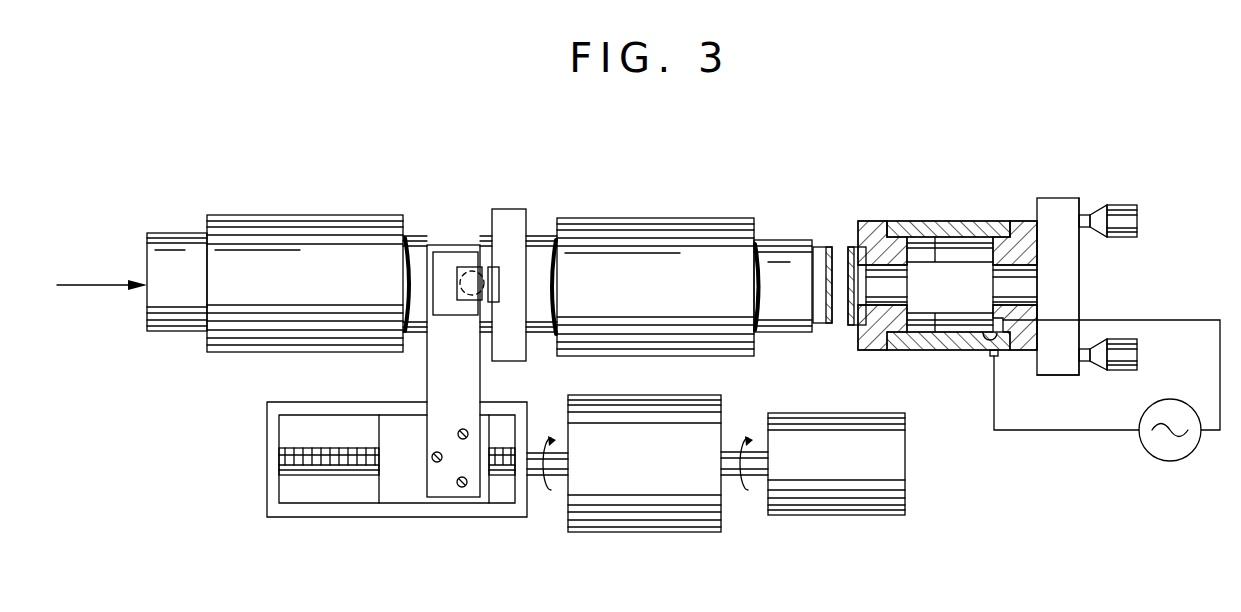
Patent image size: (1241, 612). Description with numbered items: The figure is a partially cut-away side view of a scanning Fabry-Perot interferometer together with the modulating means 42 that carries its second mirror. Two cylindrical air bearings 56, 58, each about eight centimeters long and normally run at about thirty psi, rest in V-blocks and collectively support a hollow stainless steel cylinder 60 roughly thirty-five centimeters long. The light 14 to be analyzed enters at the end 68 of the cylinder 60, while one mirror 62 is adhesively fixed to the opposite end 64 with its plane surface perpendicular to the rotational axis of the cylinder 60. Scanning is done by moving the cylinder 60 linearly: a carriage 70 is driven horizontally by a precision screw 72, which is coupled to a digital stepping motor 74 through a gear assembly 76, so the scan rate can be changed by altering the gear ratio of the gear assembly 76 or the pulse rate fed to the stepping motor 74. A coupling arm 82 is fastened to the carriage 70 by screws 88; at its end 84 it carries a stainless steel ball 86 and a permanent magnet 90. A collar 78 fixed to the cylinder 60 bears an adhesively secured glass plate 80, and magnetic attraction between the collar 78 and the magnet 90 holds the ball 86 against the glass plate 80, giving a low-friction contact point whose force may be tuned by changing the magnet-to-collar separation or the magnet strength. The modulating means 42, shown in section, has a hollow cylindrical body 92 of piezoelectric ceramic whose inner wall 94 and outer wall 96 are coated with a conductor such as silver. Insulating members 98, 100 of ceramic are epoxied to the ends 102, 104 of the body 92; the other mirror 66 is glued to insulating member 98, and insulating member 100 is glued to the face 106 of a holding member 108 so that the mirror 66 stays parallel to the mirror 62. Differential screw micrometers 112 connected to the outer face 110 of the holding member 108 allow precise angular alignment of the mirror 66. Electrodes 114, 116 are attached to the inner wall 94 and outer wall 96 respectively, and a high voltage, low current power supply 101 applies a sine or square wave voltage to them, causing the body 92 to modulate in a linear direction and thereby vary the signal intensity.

The light 14 is at (85, 282).
The modulating means 42 is at (896, 352).
The cylindrical air bearing 56 is at (639, 222).
The cylindrical air bearing 58 is at (293, 220).
The hollow metal cylinder 60 is at (780, 242).
The mirror 62 is at (830, 250).
The end of cylinder 64 is at (818, 248).
The mirror 66 is at (850, 324).
The end of cylinder 68 is at (147, 304).
The carriage 70 is at (397, 427).
The precision screw 72 is at (317, 453).
The digital stepping motor 74 is at (853, 473).
The gear assembly 76 is at (657, 475).
The collar 78 is at (506, 212).
The glass plate 80 is at (500, 287).
The coupling arm 82 is at (480, 378).
The end of coupling arm 84 is at (489, 258).
The ball 86 is at (488, 283).
The screws 88 is at (462, 430).
The permanent magnet 90 is at (455, 313).
The hollow cylindrical body 92 is at (920, 352).
The inner wall 94 is at (932, 240).
The outer wall 96 is at (955, 223).
The insulating member 98 is at (872, 225).
The insulating member 100 is at (1020, 224).
The power supply 101 is at (1150, 450).
The end of cylindrical body 102 is at (895, 222).
The end of cylindrical body 104 is at (1010, 224).
The face of holding member 106 is at (1037, 375).
The holding member 108 is at (1070, 288).
The outer face of holding member 110 is at (1080, 260).
The differential screw micrometers 112 is at (1115, 212).
The electrode 114 is at (990, 333).
The electrode 116 is at (992, 358).